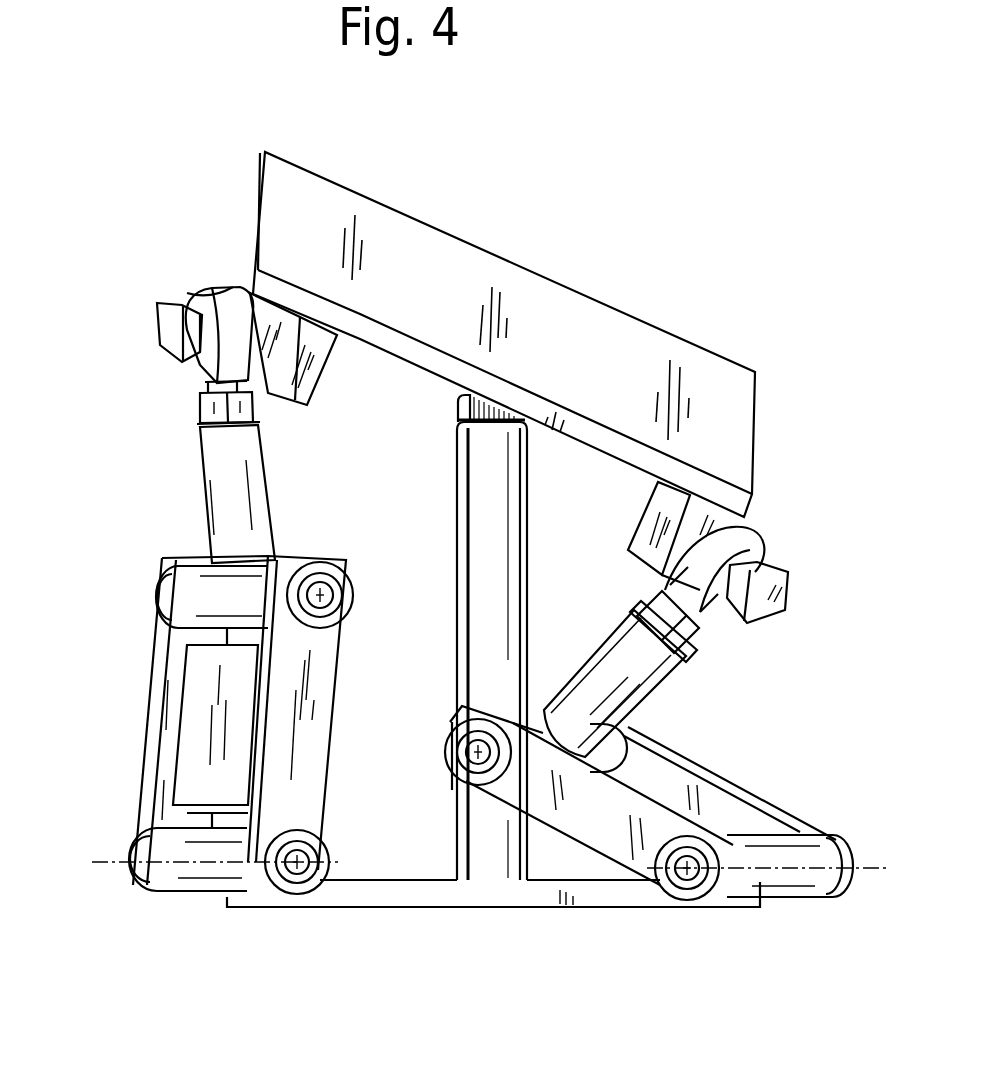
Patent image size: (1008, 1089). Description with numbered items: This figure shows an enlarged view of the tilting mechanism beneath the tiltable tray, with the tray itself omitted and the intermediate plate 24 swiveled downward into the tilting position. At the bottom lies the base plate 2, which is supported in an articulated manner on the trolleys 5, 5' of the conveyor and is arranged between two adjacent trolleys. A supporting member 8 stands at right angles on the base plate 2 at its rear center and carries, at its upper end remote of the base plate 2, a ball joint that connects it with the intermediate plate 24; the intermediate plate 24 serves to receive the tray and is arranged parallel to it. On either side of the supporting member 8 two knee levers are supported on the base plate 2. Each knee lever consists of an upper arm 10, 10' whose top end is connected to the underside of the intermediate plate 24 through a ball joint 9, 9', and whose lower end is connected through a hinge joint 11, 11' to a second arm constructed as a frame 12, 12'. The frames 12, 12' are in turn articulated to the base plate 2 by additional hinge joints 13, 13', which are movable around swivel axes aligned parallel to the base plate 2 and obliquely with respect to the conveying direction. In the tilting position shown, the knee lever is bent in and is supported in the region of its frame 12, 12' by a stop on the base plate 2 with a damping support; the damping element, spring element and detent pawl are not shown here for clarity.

The base plate 2 is at (368, 895).
The trolleys 5 is at (201, 836).
The pivot axis 5' is at (776, 836).
The supporting member 8 is at (478, 862).
The ball joint 9 is at (247, 302).
The ball joint 9' is at (716, 533).
The arm 10 is at (186, 472).
The arm 10' is at (675, 662).
The hinge joint 11 is at (223, 581).
The hinge joint 11' is at (592, 741).
The frame 12 is at (213, 720).
The frame 12' is at (643, 795).
The hinge joint 13 is at (204, 826).
The hinge joint 13' is at (755, 833).
The intermediate plate 24 is at (605, 330).